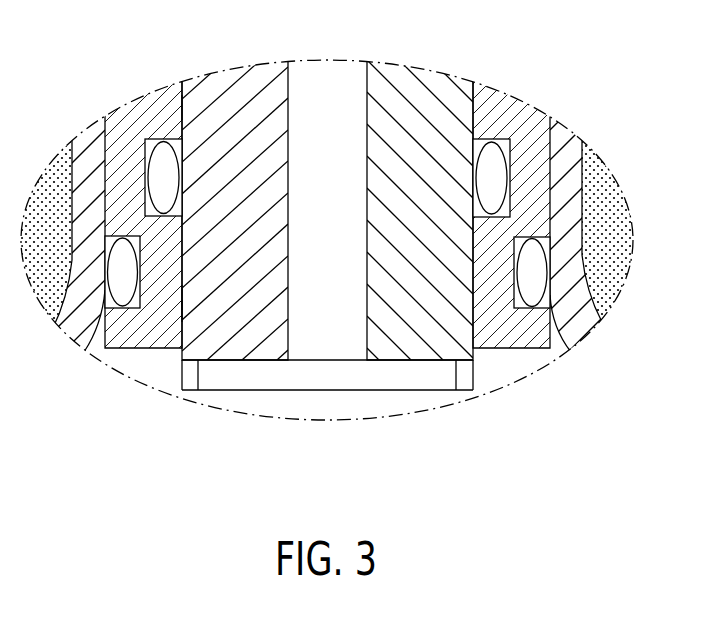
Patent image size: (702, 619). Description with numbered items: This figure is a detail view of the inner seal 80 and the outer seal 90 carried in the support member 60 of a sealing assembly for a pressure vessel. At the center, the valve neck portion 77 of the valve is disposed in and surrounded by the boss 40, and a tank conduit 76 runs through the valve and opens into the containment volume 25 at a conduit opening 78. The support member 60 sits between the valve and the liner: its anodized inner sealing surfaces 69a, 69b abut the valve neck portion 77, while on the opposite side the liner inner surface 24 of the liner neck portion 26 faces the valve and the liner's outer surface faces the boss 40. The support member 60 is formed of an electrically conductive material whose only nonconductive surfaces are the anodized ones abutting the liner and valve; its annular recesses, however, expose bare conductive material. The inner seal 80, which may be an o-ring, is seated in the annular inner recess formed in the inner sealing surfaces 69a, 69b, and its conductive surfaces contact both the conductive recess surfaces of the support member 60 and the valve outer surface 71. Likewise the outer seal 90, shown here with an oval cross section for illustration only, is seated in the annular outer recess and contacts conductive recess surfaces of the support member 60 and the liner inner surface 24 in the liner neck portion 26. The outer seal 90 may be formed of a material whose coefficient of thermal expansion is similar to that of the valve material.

The liner inner surface 24 is at (117, 146).
The containment volume 25 is at (327, 412).
The liner neck portion 26 is at (88, 155).
The boss 40 is at (613, 207).
The support member 60 is at (512, 107).
The anodized inner sealing surface 69a is at (186, 298).
The anodized inner sealing surface 69b is at (186, 107).
The valve outer surface 71 is at (178, 310).
The tank conduit 76 is at (343, 75).
The valve neck portion 77 is at (432, 76).
The conduit opening 78 is at (387, 375).
The inner seal 80 is at (163, 152).
The outer seal 90 is at (120, 288).